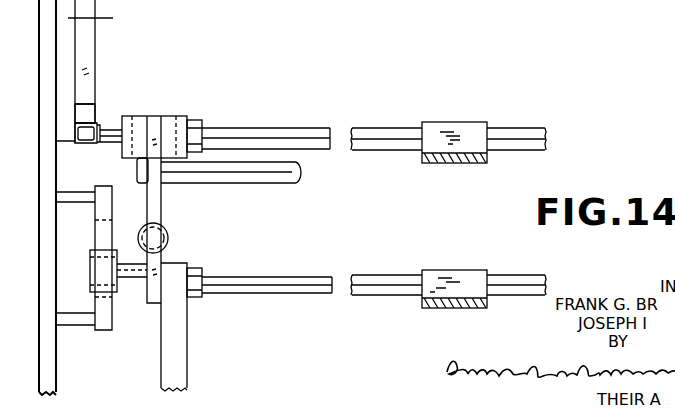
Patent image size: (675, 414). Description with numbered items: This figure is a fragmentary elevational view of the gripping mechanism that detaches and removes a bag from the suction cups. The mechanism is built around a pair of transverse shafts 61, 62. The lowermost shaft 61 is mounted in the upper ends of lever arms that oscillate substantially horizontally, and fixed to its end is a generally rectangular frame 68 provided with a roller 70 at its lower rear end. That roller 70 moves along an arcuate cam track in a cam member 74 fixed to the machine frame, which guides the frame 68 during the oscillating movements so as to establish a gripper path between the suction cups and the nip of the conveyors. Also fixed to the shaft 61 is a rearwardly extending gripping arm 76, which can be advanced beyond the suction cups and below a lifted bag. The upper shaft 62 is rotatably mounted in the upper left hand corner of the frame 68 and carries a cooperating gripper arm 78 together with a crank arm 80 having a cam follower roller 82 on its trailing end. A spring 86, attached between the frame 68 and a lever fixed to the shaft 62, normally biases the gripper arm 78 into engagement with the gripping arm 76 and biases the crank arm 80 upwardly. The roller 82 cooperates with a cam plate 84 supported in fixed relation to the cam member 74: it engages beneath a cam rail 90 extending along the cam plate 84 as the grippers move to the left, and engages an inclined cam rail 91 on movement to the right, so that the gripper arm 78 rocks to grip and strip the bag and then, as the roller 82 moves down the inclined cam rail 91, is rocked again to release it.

The cam plate 84 is at (102, 18).
The inclined cam rail 91 is at (88, 48).
The cam rail 90 is at (88, 111).
The crank arm 80 is at (140, 120).
The cam follower roller 82 is at (96, 147).
The transverse shaft 62 is at (294, 131).
The cooperating gripper arm 78 is at (448, 122).
The cam member 74 is at (112, 203).
The rectangular frame 68 is at (162, 201).
The spring 86 is at (170, 239).
The roller 70 is at (91, 272).
The transverse shaft 61 is at (308, 294).
The gripping arm 76 is at (455, 272).